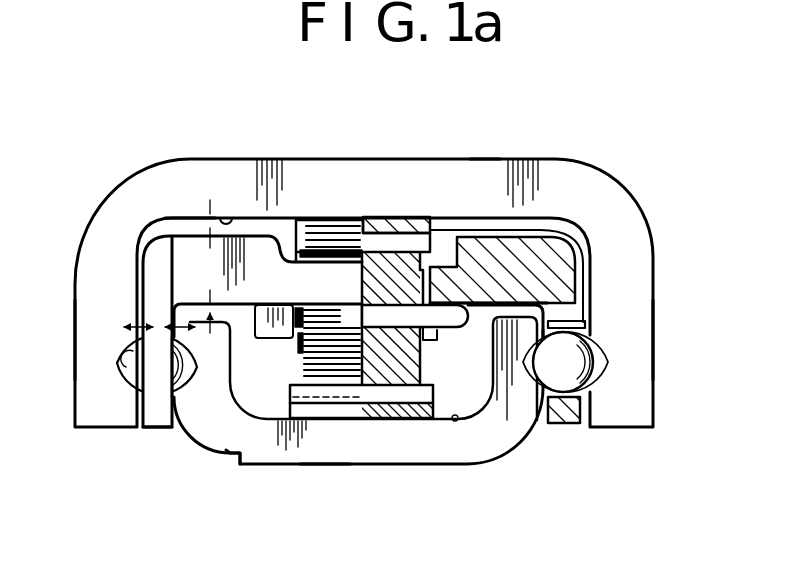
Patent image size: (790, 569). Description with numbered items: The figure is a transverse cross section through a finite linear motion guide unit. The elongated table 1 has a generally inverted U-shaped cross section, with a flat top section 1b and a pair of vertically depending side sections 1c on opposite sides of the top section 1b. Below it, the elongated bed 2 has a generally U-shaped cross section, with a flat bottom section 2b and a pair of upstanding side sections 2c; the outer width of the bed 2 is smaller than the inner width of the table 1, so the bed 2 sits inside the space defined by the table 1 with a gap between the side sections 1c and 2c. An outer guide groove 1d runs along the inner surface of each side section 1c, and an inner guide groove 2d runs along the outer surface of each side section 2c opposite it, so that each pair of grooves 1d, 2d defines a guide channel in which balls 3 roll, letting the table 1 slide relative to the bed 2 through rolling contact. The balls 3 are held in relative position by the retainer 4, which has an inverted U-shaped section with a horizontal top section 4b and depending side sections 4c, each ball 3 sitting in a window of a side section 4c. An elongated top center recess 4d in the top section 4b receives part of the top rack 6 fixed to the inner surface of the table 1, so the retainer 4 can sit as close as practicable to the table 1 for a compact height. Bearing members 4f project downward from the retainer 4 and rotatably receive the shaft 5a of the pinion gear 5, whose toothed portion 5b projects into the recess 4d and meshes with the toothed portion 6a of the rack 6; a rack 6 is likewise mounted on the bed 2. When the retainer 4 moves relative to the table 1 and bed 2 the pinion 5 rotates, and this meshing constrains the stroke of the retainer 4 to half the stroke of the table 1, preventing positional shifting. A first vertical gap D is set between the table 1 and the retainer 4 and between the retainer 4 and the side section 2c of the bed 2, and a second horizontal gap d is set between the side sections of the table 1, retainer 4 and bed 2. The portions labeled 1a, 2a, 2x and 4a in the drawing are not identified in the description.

The table 1 is at (163, 177).
The housing top wall 1a is at (220, 216).
The flat top section 1b is at (481, 158).
The side section 1c is at (100, 340).
The outer guide groove 1d is at (122, 360).
The bed 2 is at (268, 443).
The base projection 2a is at (466, 421).
The flat bottom section 2b is at (323, 464).
The side section 2c is at (216, 357).
The inner guide groove 2d is at (196, 367).
The base step 2x is at (233, 455).
The ball 3 is at (545, 395).
The retainer 4 is at (557, 253).
The holder bottom surface 4a is at (563, 303).
The top section 4b is at (567, 222).
The side section 4c is at (155, 428).
The top center recess 4d is at (262, 216).
The bearing member 4f is at (437, 342).
The pinion gear 5 is at (374, 217).
The shaft 5a is at (456, 330).
The toothed portion 5b is at (411, 222).
The rack 6 is at (335, 233).
The toothed portion 6a is at (300, 220).
The first predetermined gap D is at (205, 305).
The second predetermined gap d is at (180, 325).